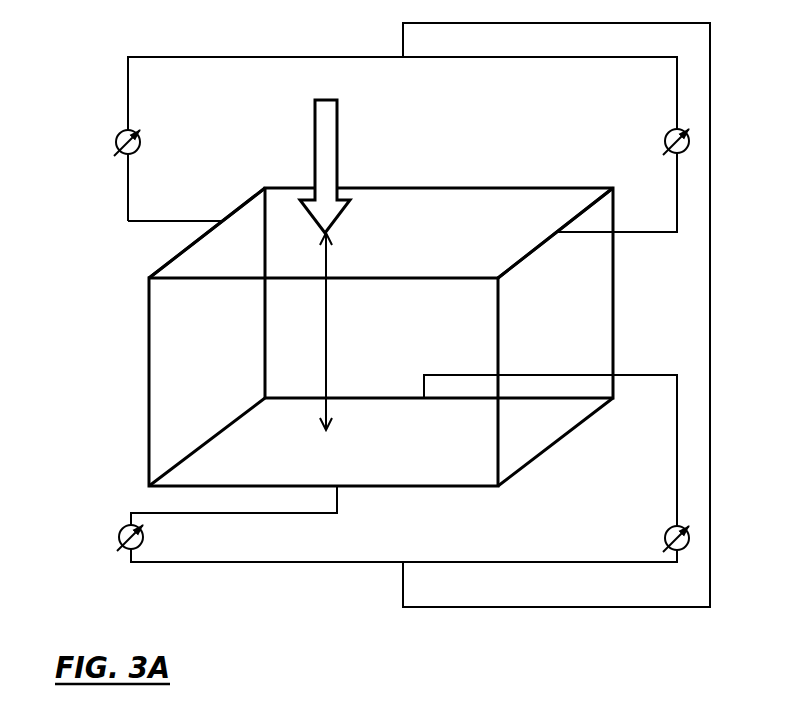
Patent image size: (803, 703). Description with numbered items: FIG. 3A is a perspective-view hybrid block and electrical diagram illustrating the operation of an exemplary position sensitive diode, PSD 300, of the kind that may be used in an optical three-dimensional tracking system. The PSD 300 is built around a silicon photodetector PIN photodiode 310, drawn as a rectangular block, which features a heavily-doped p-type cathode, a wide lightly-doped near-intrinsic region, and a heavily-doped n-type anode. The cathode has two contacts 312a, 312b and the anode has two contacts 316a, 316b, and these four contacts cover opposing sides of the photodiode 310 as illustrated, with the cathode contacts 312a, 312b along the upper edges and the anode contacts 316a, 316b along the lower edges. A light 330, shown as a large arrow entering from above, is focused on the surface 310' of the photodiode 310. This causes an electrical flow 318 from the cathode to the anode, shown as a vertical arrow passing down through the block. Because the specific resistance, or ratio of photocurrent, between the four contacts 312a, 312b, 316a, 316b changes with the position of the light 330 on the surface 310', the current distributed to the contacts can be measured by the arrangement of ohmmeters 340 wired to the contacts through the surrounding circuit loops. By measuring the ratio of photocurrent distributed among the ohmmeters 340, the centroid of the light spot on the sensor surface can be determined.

The position sensitive diode (PSD) 300 is at (270, 645).
The photodiode 310 is at (320, 337).
The surface of the photodiode 310' is at (439, 253).
The cathode contact 312a is at (221, 221).
The cathode contact 312b is at (556, 232).
The anode contact 316a is at (423, 397).
The anode contact 316b is at (338, 487).
The electrical flow 318 is at (323, 370).
The light 330 is at (323, 143).
The ohmmeters 340 is at (103, 138).